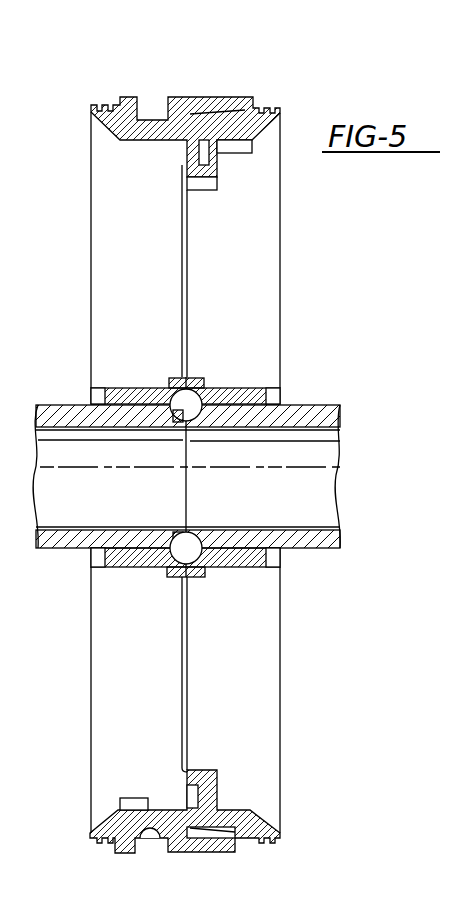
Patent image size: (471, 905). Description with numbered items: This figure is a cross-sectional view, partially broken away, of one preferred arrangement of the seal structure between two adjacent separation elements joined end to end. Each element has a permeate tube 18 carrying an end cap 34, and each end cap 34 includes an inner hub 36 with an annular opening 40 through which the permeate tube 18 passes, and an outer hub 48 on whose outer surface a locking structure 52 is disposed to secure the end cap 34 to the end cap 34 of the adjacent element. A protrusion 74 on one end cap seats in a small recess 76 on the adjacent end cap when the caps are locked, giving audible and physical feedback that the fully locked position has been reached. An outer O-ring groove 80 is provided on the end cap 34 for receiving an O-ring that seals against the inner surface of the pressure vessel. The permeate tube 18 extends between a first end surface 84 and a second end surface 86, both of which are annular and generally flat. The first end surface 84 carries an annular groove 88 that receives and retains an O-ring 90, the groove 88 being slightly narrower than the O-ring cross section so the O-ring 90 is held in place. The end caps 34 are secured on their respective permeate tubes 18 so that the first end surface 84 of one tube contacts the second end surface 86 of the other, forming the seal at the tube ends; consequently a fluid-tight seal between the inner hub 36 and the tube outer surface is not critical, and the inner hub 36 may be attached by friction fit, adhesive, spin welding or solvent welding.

The permeate tube 18 is at (305, 405).
The end cap 34 is at (219, 853).
The inner hub 36 is at (254, 384).
The annular opening 40 is at (262, 548).
The outer hub 48 is at (203, 97).
The locking structure 52 is at (185, 152).
The protrusion 74 is at (203, 192).
The recess 76 is at (208, 162).
The outer O-ring groove 80 is at (150, 832).
The first permeate tube end surface 84 is at (196, 378).
The second permeate tube end surface 86 is at (178, 532).
The annular groove 88 is at (170, 390).
The O-ring 90 is at (163, 552).